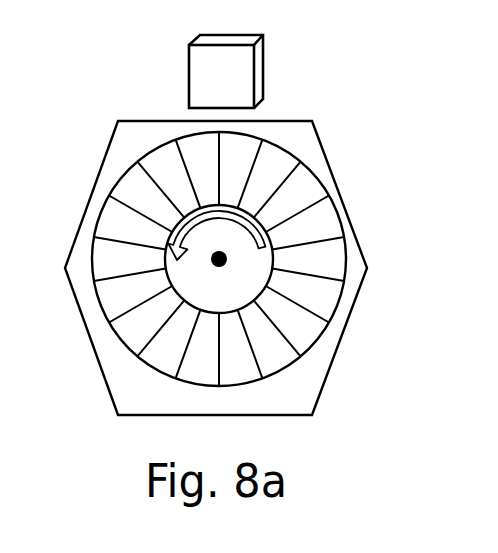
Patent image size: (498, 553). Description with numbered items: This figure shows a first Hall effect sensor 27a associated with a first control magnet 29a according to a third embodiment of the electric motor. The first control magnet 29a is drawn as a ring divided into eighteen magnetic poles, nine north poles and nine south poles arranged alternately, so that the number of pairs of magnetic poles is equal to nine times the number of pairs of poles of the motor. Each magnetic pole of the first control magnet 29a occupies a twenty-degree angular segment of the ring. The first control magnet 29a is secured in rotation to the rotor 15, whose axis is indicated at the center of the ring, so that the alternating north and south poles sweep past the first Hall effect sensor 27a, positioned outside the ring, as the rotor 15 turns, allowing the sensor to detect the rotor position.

The rotor 15 is at (227, 258).
The first Hall effect sensor 27a is at (238, 77).
The first control magnet 29a is at (118, 208).